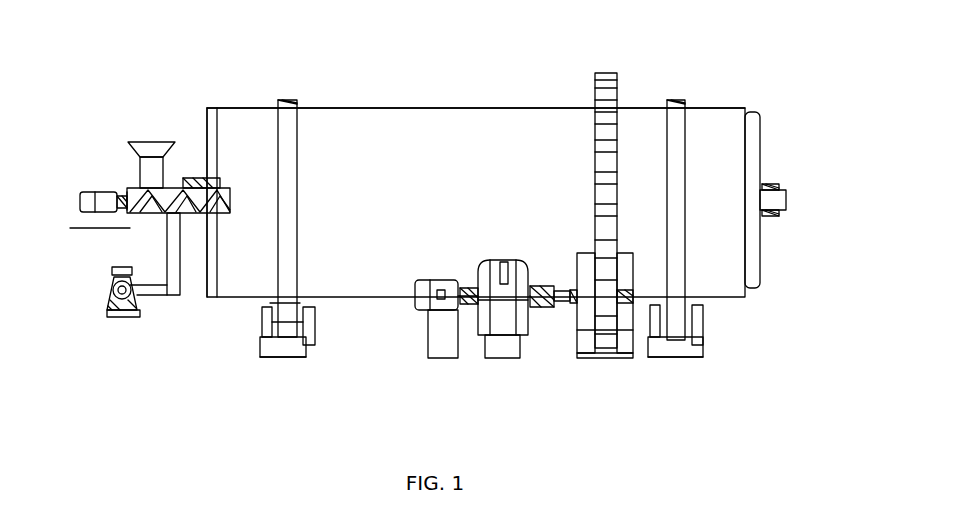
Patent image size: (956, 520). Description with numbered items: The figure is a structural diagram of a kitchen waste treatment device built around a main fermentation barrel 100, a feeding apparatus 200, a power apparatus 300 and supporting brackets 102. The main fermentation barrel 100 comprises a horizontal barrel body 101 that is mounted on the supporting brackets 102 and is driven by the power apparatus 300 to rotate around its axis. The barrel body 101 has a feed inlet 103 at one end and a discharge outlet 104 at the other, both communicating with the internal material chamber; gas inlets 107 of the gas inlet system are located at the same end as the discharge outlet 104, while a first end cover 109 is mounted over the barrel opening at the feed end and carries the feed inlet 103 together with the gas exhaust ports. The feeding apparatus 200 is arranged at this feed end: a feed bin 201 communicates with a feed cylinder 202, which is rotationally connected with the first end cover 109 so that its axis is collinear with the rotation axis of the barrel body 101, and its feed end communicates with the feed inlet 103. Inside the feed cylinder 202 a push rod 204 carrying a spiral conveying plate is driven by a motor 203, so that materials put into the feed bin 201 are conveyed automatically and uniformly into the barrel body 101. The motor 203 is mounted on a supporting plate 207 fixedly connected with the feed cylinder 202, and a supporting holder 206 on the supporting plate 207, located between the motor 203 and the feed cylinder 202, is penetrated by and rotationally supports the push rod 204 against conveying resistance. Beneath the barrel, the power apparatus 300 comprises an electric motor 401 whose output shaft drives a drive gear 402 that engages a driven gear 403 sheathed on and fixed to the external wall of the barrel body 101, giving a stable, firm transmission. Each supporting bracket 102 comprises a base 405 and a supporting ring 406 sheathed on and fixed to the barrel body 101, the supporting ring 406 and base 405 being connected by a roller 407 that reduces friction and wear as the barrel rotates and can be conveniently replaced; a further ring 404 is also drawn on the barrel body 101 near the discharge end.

The main fermentation barrel 100 is at (362, 108).
The barrel body 101 is at (408, 120).
The supporting bracket 102 is at (290, 363).
The feed inlet 103 is at (215, 190).
The discharge outlet 104 is at (747, 247).
The gas inlet 107 is at (755, 200).
The first end cover 109 is at (210, 122).
The feeding apparatus 200 is at (135, 190).
The feed bin 201 is at (153, 140).
The feed cylinder 202 is at (143, 203).
The motor 203 is at (102, 196).
The push rod 204 is at (81, 202).
The supporting holder 206 is at (118, 268).
The supporting plate 207 is at (103, 213).
The power apparatus 300 is at (583, 357).
The electric motor 401 is at (425, 297).
The drive gear 402 is at (603, 298).
The driven gear 403 is at (603, 137).
The riding ring 404 is at (748, 158).
The base 405 is at (305, 343).
The supporting ring 406 is at (288, 133).
The roller 407 is at (290, 323).